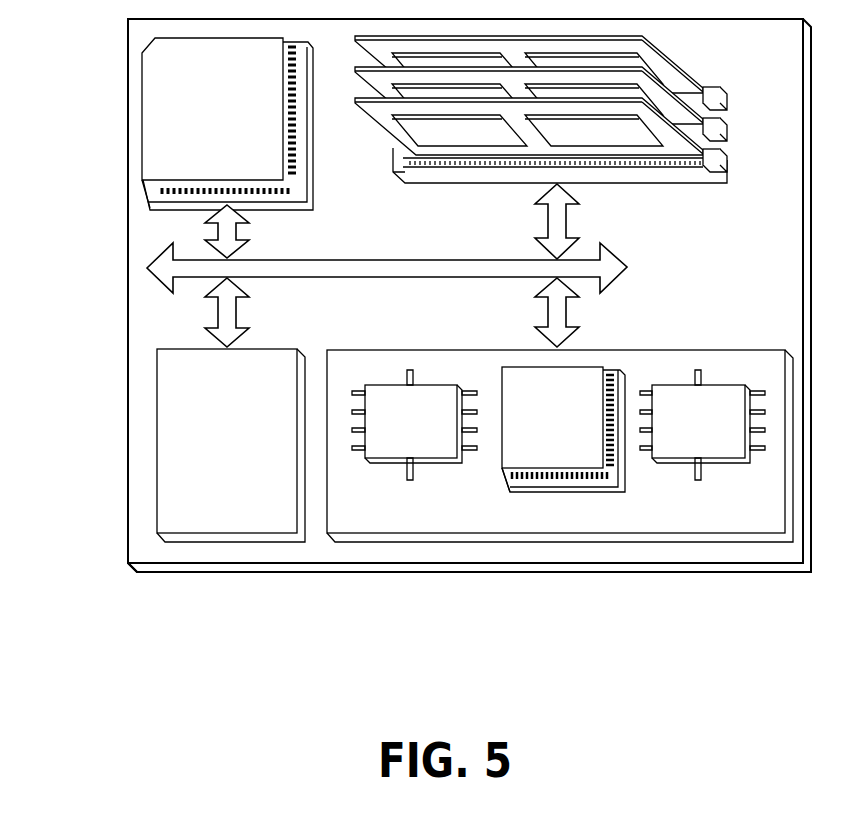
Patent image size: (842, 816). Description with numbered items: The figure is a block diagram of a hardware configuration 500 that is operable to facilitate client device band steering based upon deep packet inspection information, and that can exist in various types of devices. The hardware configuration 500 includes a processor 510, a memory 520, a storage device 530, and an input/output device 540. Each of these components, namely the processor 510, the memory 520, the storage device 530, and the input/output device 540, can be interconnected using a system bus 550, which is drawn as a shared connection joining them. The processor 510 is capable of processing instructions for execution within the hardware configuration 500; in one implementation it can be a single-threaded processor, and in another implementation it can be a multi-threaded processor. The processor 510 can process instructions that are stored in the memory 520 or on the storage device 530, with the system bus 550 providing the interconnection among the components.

The hardware configuration 500 is at (88, 600).
The processor 510 is at (273, 173).
The memory 520 is at (693, 82).
The storage device 530 is at (287, 526).
The input/output device 540 is at (748, 350).
The system bus 550 is at (382, 277).